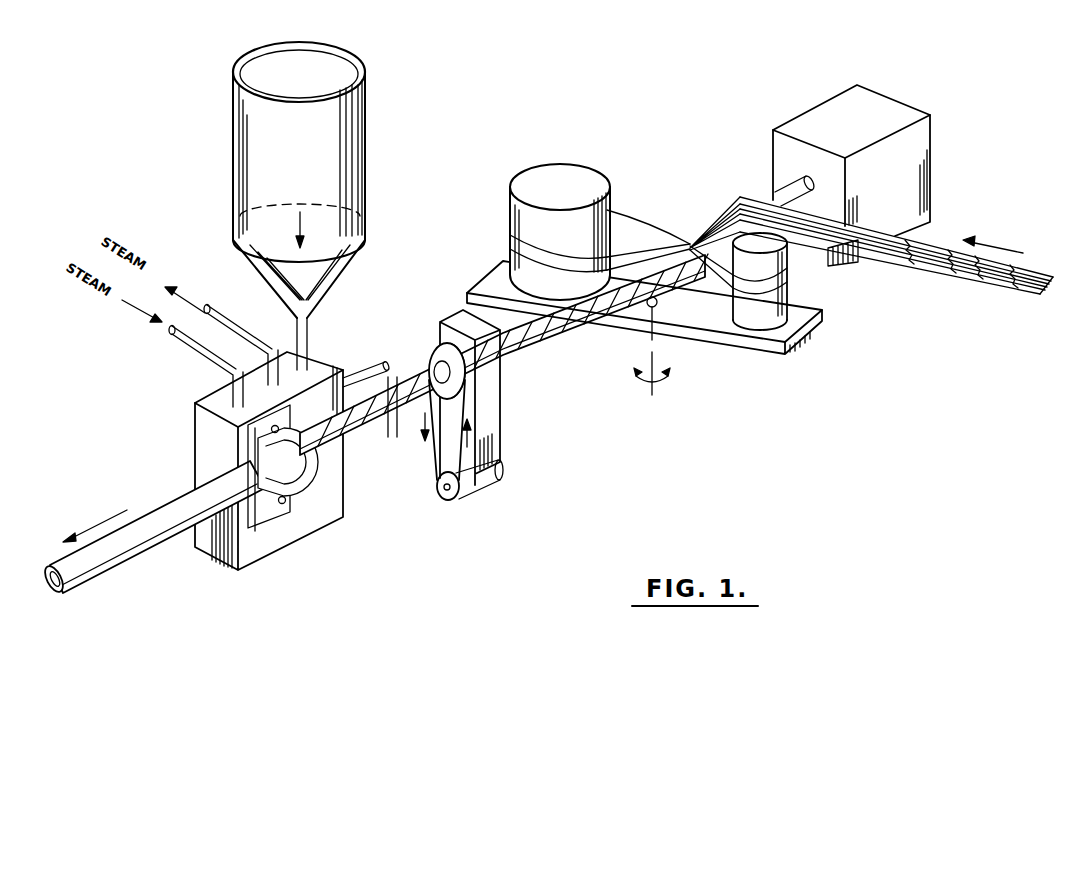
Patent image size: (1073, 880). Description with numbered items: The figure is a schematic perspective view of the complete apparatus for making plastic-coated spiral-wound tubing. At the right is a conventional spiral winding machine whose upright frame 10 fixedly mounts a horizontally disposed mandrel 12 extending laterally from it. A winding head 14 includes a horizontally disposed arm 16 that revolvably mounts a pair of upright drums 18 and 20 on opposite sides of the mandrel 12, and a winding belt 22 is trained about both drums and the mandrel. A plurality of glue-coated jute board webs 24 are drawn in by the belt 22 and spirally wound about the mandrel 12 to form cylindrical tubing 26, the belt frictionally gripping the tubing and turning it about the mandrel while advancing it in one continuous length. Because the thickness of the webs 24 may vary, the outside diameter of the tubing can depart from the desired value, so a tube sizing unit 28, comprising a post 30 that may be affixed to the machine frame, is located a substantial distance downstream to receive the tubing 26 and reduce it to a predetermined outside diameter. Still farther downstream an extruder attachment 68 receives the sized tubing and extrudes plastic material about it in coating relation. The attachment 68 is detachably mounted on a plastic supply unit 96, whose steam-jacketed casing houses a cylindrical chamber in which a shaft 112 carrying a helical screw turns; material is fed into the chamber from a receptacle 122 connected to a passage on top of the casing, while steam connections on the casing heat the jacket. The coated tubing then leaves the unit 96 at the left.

The upright frame 10 is at (895, 191).
The mandrel 12 is at (777, 193).
The winding head 14 is at (654, 345).
The arm 16 is at (797, 325).
The drum 18 is at (788, 300).
The drum 20 is at (590, 173).
The winding belt 22 is at (641, 230).
The jute board webs 24 is at (1012, 282).
The cylindrical tubing 26 is at (543, 336).
The tube sizing unit 28 is at (507, 484).
The post 30 is at (493, 413).
The extruder attachment 68 is at (290, 462).
The plastic supply unit 96 is at (203, 430).
The shaft 112 is at (370, 361).
The receptacle 122 is at (315, 161).